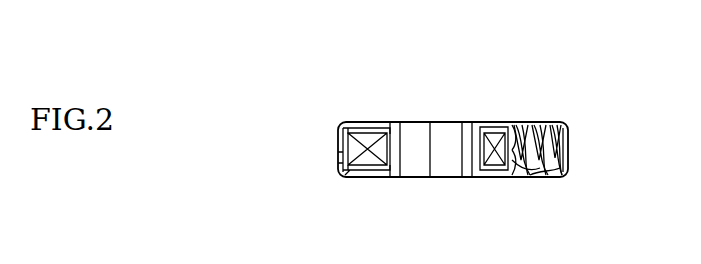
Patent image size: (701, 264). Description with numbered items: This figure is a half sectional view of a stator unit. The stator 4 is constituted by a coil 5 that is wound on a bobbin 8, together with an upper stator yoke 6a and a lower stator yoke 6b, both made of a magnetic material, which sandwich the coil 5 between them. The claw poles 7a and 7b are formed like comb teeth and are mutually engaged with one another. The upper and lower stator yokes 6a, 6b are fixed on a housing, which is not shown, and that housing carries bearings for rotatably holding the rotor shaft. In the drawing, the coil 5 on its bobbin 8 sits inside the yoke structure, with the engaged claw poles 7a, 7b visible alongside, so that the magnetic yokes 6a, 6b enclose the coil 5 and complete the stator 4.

The stator 4 is at (467, 97).
The coil 5 is at (346, 148).
The upper stator yoke 6a is at (349, 124).
The lower stator yoke 6b is at (347, 175).
The claw pole 7a is at (529, 122).
The claw pole 7b is at (520, 167).
The bobbin 8 is at (393, 122).